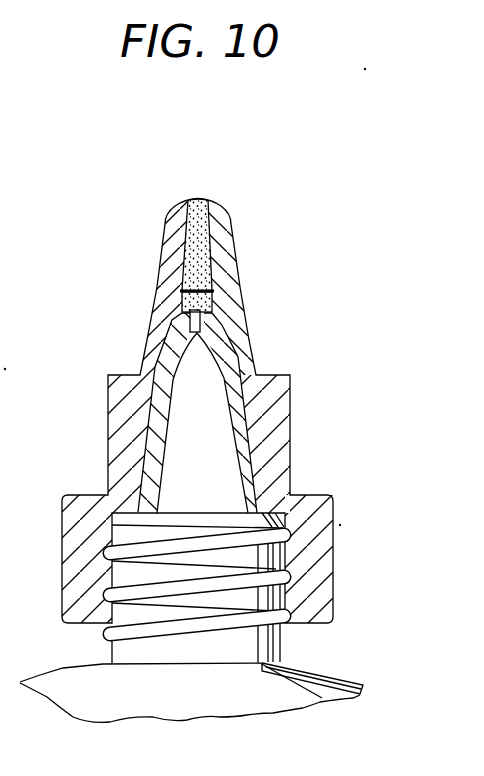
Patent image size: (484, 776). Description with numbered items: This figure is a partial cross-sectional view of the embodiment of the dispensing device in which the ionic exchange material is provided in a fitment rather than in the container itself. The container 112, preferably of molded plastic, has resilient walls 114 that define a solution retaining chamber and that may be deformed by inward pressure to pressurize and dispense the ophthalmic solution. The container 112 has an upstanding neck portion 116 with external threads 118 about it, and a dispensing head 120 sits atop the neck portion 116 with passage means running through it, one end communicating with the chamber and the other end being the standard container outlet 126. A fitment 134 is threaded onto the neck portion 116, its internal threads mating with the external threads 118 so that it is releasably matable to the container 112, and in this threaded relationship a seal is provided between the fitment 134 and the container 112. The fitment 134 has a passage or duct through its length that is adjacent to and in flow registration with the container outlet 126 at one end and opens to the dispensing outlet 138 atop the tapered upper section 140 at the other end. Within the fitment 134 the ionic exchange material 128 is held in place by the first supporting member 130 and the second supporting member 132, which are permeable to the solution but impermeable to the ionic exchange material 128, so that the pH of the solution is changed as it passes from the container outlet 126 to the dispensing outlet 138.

The container 112 is at (337, 664).
The resilient walls 114 is at (187, 698).
The neck portion 116 is at (110, 534).
The external threads 118 is at (284, 594).
The dispensing head 120 is at (236, 356).
The dispensing outlet 126 is at (202, 323).
The ionic exchange material 128 is at (234, 234).
The first supporting member 130 is at (184, 298).
The second supporting member 132 is at (211, 202).
The fitment 134 is at (333, 482).
The dispensing outlet 138 is at (198, 199).
The tapered upper section 140 is at (159, 260).